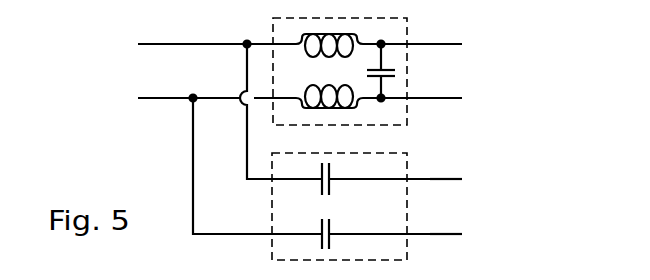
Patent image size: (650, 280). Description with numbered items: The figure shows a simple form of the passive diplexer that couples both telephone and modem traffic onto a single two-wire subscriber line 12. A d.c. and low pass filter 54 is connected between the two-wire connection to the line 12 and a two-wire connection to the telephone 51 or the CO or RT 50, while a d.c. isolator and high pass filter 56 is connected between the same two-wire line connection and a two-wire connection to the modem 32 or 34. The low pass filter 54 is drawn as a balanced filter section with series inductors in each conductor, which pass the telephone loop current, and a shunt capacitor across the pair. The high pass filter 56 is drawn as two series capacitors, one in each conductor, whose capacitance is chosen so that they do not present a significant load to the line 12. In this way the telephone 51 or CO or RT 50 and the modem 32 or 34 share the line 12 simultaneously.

The two-wire subscriber line 12 is at (184, 138).
The d.c. and low pass filter 54 is at (407, 29).
The d.c. isolator and high pass filter 56 is at (400, 163).
The subscriber telephone 51 is at (485, 58).
The telephone CO or RT 50 is at (485, 88).
The slave modem 32 is at (495, 193).
The master modem 34 is at (496, 221).